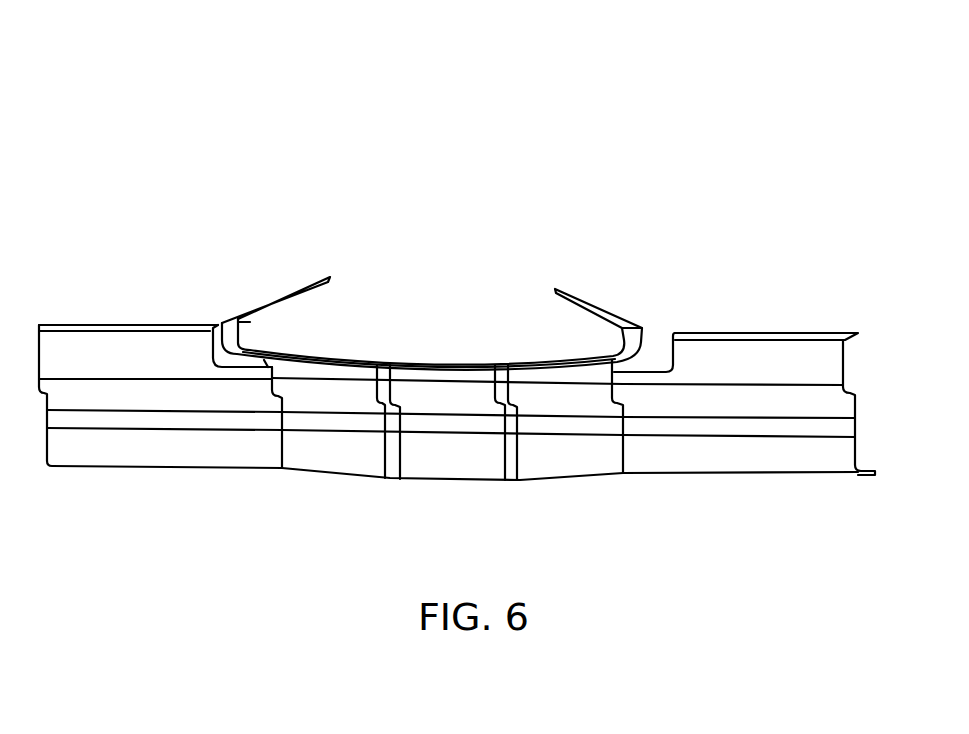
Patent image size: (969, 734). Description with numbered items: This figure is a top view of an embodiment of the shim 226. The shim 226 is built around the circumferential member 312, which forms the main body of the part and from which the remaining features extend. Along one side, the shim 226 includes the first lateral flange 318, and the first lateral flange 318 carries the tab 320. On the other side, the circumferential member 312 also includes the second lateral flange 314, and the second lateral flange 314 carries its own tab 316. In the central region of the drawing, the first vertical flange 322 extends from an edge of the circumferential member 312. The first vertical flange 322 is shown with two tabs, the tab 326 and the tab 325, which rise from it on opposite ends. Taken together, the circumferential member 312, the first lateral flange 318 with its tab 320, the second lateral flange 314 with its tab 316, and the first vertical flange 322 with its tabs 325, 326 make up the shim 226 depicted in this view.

The shim 226 is at (520, 72).
The circumferential member 312 is at (545, 452).
The second lateral flange 314 is at (138, 435).
The tab 316 is at (128, 328).
The first lateral flange 318 is at (758, 438).
The tab 320 is at (778, 332).
The first vertical flange 322 is at (355, 357).
The tab 325 is at (293, 283).
The tab 326 is at (593, 298).